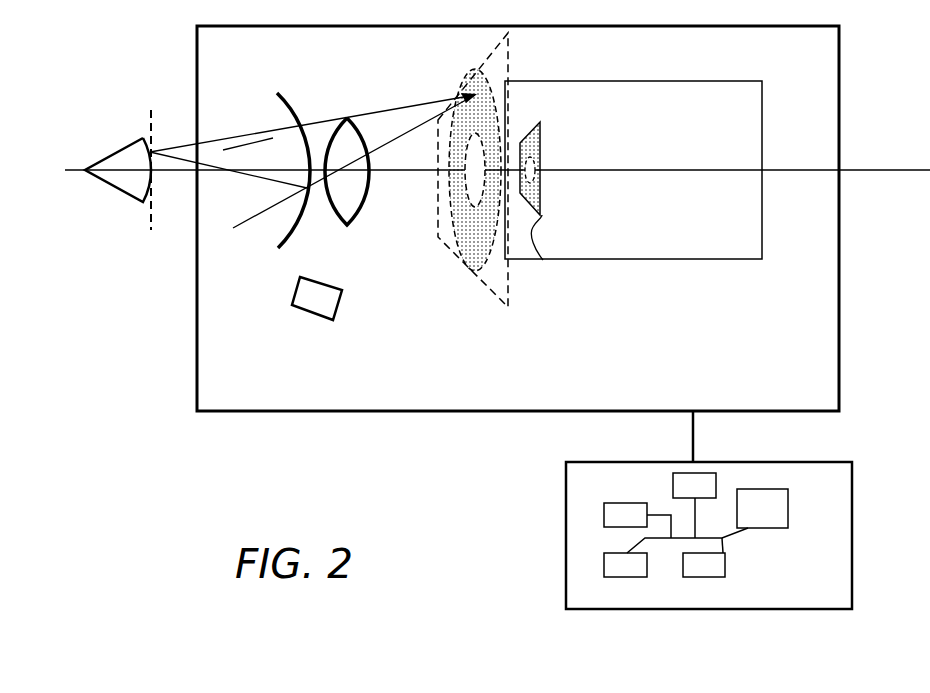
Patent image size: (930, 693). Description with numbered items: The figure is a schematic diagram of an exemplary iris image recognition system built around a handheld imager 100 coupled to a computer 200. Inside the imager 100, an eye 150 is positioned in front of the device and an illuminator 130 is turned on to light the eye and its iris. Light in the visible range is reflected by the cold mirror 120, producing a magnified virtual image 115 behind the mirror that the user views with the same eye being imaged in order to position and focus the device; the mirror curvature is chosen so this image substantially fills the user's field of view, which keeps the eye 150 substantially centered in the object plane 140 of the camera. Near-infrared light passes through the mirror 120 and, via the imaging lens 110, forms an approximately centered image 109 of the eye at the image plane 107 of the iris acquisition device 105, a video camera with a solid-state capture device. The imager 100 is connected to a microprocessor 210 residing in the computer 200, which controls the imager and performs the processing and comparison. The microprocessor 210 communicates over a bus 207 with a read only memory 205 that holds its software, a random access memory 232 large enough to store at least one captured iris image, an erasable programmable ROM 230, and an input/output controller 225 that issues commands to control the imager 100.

The handheld imager 100 is at (832, 55).
The iris acquisition device 105 is at (755, 255).
The image plane 107 is at (543, 260).
The image of the iris 109 is at (527, 140).
The imaging lens 110 is at (360, 148).
The virtual image 115 is at (463, 247).
The mirror 120 is at (302, 135).
The illuminator 130 is at (310, 313).
The object plane 140 is at (150, 113).
The eye 150 is at (132, 145).
The computer 200 is at (845, 488).
The read only memory 205 is at (702, 577).
The bus 207 is at (733, 539).
The microprocessor 210 is at (783, 520).
The input/output controller 225 is at (610, 502).
The erasable programmable ROM 230 is at (623, 577).
The random access memory 232 is at (673, 488).